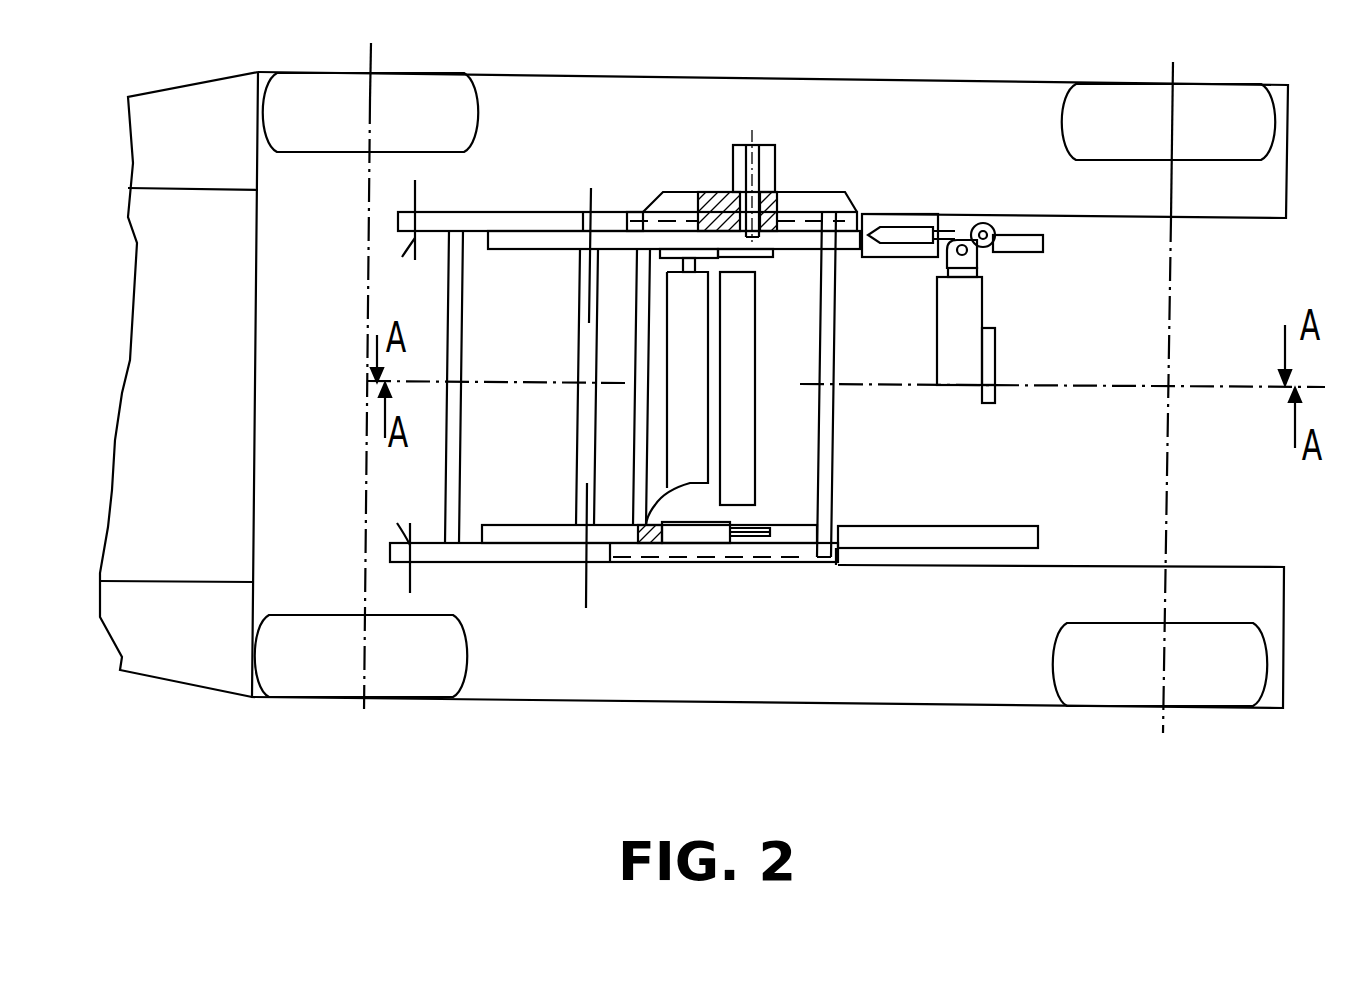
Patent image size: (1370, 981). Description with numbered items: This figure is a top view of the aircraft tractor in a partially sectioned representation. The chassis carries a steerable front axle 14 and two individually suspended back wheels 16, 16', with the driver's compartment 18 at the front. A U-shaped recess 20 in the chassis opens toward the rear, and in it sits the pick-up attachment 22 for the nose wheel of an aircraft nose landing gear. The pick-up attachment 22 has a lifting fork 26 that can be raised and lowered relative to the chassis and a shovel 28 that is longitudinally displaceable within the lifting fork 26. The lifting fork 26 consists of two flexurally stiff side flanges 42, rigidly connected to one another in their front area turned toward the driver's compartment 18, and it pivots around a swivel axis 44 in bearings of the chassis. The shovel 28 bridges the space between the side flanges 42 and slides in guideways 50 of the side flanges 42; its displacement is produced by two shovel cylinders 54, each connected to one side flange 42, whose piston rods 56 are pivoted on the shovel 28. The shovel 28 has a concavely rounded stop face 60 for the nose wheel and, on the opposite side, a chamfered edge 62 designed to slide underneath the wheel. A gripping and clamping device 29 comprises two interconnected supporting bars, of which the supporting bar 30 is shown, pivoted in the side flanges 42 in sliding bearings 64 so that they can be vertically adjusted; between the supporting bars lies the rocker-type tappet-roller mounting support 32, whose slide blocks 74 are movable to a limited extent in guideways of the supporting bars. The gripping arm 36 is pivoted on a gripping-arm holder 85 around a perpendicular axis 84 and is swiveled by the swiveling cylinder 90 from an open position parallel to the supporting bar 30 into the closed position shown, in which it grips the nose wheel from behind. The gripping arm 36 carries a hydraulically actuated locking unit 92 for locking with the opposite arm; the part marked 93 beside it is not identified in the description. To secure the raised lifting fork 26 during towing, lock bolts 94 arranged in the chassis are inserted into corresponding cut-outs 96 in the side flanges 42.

The steerable front axle 14 is at (372, 52).
The back wheel 16 is at (1169, 397).
The back wheel 16' is at (1160, 693).
The driver's compartment 18 is at (207, 102).
The U-shaped recess 20 is at (1203, 303).
The pick-up attachment 22 is at (537, 582).
The lifting fork 26 is at (530, 187).
The shovel 28 is at (793, 493).
The gripping and clamping device 29 is at (1027, 358).
The supporting bar 30 is at (1040, 243).
The tappet-roller mounting support 32 is at (688, 428).
The gripping arm 36 is at (945, 313).
The side flange 42 is at (822, 210).
The swivel axis 44 is at (394, 386).
The guideway 50 is at (643, 213).
The shovel cylinder 54 is at (685, 535).
The piston rod 56 is at (758, 535).
The stop face 60 is at (752, 335).
The chamfered edge 62 is at (830, 446).
The sliding bearing 64 is at (591, 188).
The slide block 74 is at (747, 262).
The perpendicular axis 84 is at (965, 230).
The gripping-arm holder 85 is at (903, 250).
The swiveling cylinder 90 is at (900, 232).
The locking unit 92 is at (992, 353).
The stop 93 is at (992, 398).
The lock bolt 94 is at (747, 185).
The cut-out 96 is at (720, 200).